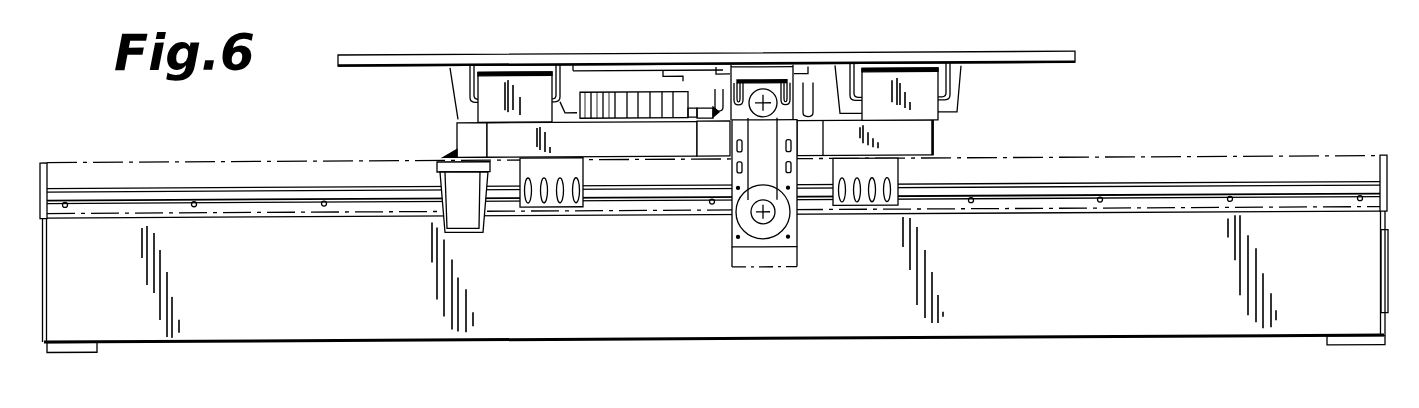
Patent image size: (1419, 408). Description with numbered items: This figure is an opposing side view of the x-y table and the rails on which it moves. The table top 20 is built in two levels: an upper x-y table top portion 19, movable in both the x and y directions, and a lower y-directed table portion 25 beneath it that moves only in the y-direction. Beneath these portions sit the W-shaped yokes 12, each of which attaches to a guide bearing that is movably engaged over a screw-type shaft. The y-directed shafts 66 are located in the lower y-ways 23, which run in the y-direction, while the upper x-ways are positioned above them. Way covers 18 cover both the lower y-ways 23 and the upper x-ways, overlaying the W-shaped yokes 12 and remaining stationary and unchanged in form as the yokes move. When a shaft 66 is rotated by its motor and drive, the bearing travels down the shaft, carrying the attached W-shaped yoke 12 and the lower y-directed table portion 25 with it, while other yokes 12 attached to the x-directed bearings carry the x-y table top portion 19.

The W-shaped yoke 12 is at (453, 82).
The way cover 18 is at (477, 108).
The x-y table top portion 19 is at (405, 33).
The table top 20 is at (577, 150).
The lower y-way 23 is at (1037, 187).
The y-directed table portion 25 is at (915, 141).
The y-directed shaft 66 is at (206, 187).